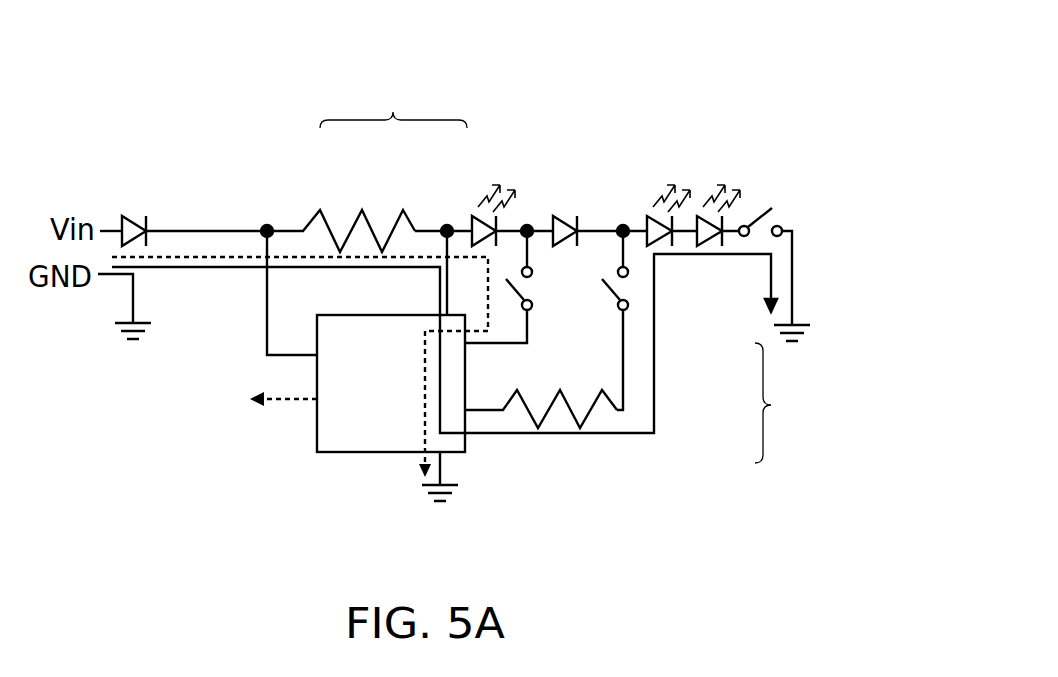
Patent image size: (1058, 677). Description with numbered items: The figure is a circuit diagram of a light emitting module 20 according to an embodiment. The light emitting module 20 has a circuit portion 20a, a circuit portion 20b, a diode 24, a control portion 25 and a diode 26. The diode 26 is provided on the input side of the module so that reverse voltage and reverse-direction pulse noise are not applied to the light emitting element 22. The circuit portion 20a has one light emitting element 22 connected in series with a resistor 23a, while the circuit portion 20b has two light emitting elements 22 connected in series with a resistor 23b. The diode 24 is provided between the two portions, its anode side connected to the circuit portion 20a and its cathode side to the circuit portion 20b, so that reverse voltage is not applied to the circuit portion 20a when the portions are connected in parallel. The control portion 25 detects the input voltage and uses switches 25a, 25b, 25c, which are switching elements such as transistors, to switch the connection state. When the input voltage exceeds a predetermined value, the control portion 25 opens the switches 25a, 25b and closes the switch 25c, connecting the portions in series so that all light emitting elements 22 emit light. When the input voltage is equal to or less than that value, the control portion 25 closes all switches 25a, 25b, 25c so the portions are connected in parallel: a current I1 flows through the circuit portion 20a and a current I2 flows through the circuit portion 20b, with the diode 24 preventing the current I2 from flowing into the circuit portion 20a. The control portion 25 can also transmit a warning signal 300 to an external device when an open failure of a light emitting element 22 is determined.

The light emitting module 20 is at (749, 147).
The circuit portion 20a is at (393, 100).
The circuit portion 20b is at (789, 403).
The light emitting element 22 is at (474, 218).
The resistor 23a is at (348, 228).
The resistor 23b is at (590, 413).
The diode 24 is at (560, 216).
The control portion 25 is at (355, 420).
The switch 25a is at (554, 292).
The switch 25b is at (643, 289).
The switch 25c is at (798, 206).
The diode 26 is at (146, 217).
The warning signal 300 is at (293, 402).
The current I1 is at (423, 398).
The current I2 is at (545, 437).